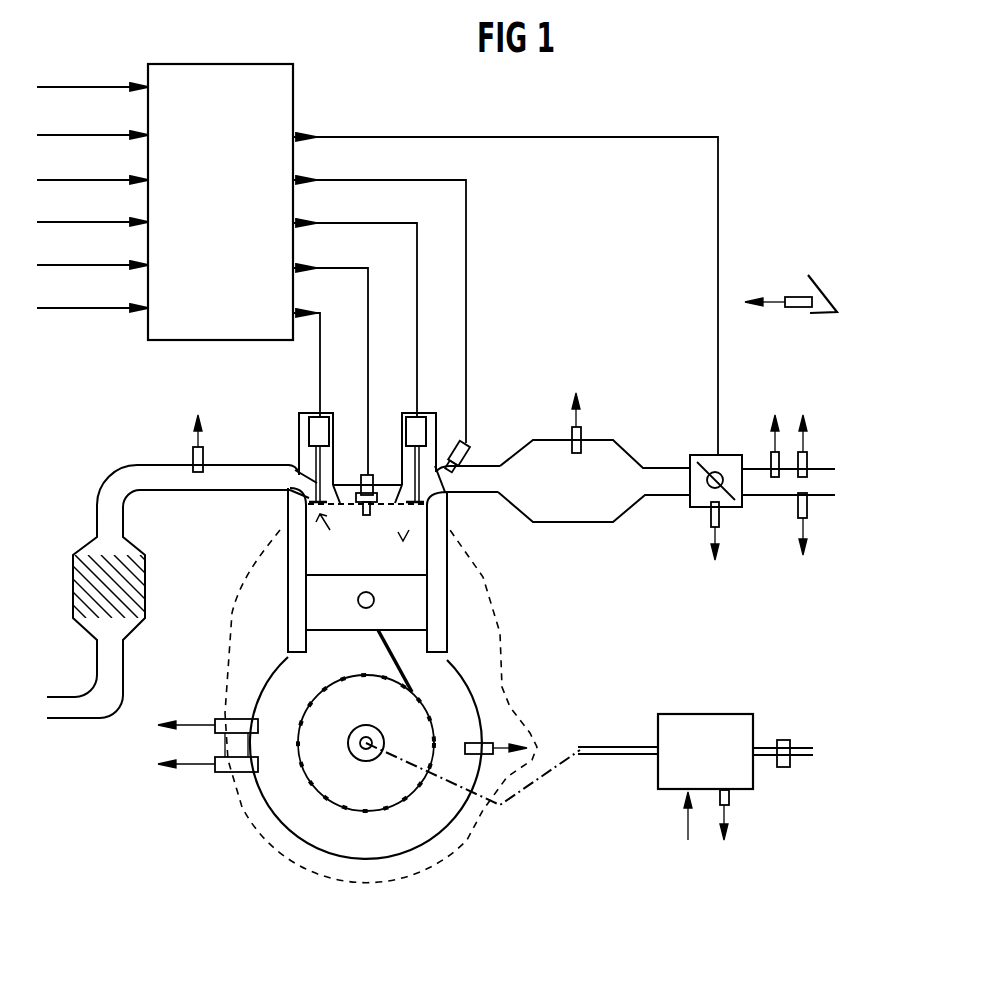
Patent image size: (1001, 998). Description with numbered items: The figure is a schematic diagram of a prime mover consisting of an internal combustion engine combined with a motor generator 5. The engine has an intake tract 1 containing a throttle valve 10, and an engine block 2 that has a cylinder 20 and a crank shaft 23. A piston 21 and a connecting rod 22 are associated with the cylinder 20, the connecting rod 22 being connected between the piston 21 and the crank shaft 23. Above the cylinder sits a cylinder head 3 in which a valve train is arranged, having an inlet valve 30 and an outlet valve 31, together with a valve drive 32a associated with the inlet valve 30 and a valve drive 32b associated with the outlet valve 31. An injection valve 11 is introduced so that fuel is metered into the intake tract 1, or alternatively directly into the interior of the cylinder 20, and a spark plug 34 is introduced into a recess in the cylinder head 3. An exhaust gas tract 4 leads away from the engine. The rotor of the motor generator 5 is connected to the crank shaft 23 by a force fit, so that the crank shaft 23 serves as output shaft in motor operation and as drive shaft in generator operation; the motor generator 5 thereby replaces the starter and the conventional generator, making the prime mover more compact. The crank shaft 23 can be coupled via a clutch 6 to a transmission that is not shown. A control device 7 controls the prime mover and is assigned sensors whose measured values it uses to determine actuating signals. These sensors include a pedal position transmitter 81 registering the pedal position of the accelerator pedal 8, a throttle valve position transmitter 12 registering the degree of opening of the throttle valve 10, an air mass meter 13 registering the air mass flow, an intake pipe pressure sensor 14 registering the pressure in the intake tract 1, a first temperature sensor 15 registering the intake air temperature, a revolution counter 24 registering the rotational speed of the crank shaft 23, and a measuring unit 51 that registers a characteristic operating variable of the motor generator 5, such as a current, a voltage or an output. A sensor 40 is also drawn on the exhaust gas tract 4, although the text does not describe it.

The intake tract 1 is at (563, 512).
The engine block 2 is at (243, 642).
The cylinder head 3 is at (292, 420).
The exhaust gas tract 4 is at (97, 508).
The motor generator 5 is at (705, 714).
The clutch 6 is at (785, 740).
The control device 7 is at (293, 83).
The accelerator pedal 8 is at (822, 273).
The throttle valve 10 is at (703, 455).
The injection valve 11 is at (468, 443).
The throttle valve position transmitter 12 is at (710, 520).
The air mass meter 13 is at (772, 453).
The intake pipe pressure sensor 14 is at (570, 432).
The first temperature sensor 15 is at (797, 507).
The cylinder 20 is at (288, 610).
The piston 21 is at (413, 606).
The connecting rod 22 is at (405, 668).
The crank shaft 23 is at (367, 745).
The revolution counter 24 is at (485, 754).
The inlet valve 30 is at (410, 457).
The outlet valve 31 is at (300, 457).
The valve drive 32a is at (420, 418).
The valve drive 32b is at (315, 418).
The spark plug 34 is at (356, 480).
The oxygen sensor 40 is at (193, 452).
The measuring unit 51 is at (730, 797).
The pedal position transmitter 81 is at (798, 308).